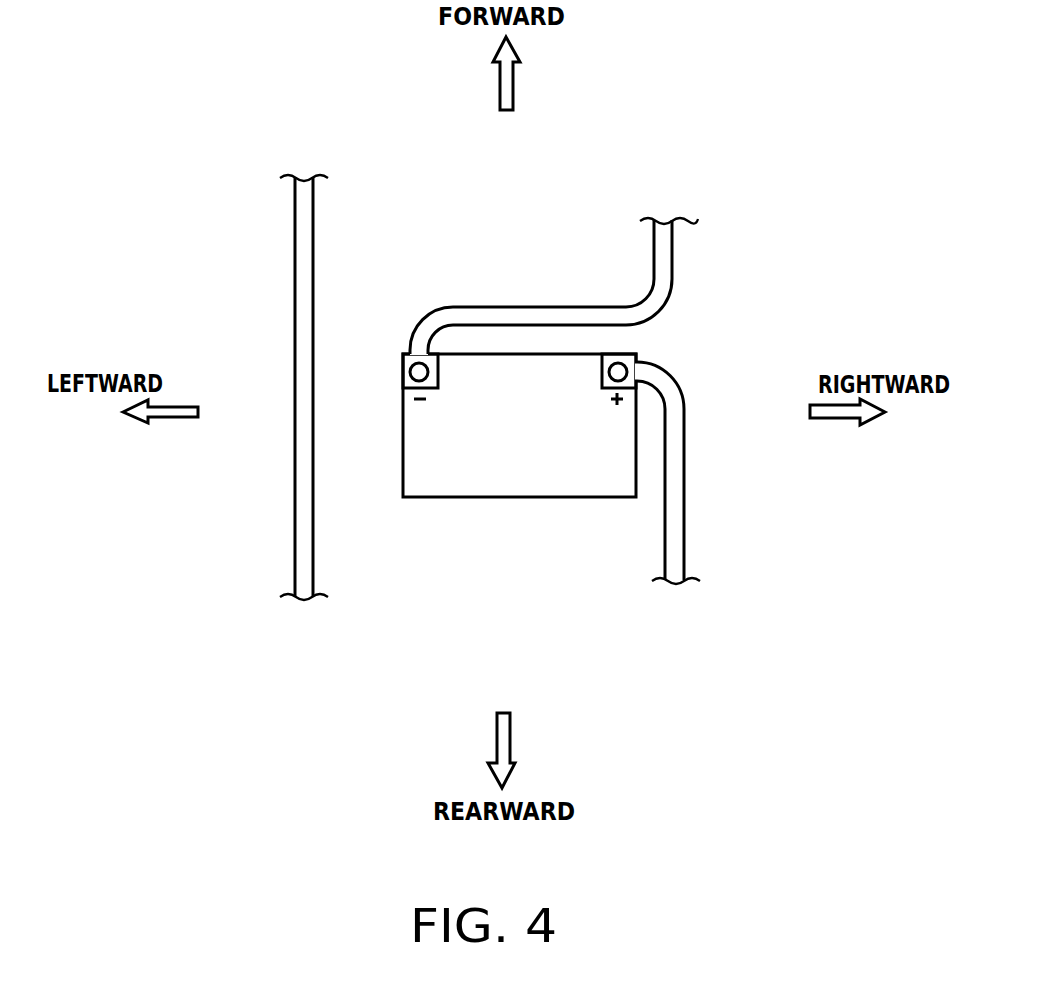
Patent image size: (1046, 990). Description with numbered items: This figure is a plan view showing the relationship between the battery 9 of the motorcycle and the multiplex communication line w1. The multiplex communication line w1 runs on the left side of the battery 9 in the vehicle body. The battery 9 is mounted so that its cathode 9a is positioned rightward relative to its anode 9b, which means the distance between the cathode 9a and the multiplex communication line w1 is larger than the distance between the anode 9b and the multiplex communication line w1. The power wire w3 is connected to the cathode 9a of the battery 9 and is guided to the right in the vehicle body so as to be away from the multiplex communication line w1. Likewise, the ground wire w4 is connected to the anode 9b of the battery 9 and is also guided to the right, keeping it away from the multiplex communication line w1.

The battery 9 is at (528, 508).
The cathode 9a is at (620, 368).
The anode 9b is at (410, 376).
The multiplex communication line w1 is at (295, 276).
The power wire w3 is at (685, 521).
The ground wire w4 is at (570, 305).